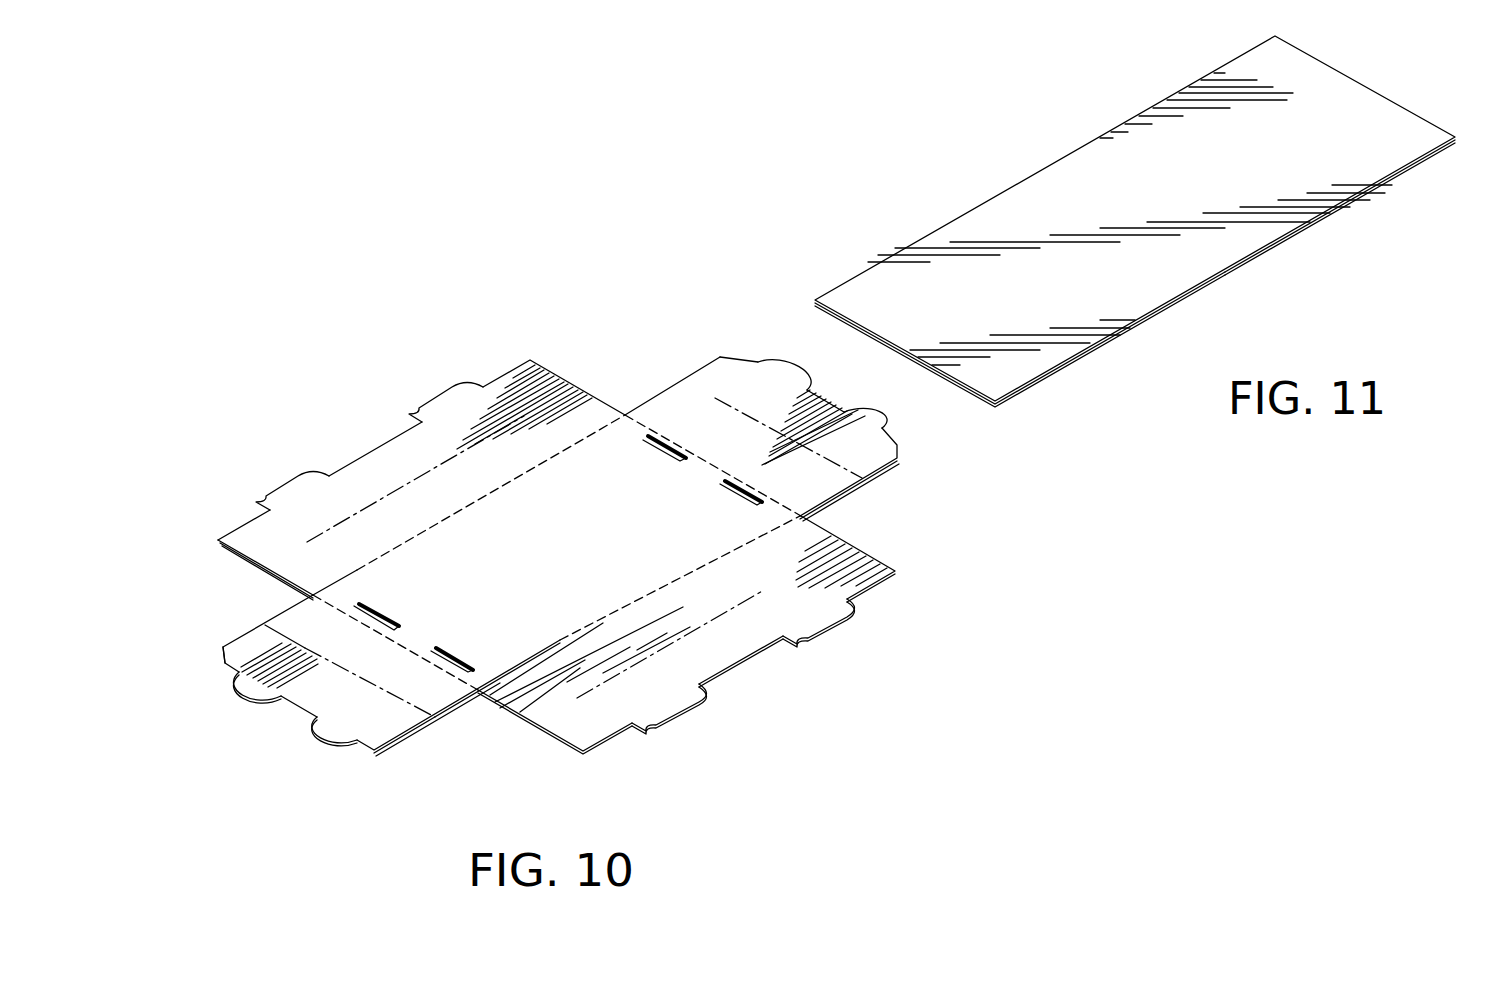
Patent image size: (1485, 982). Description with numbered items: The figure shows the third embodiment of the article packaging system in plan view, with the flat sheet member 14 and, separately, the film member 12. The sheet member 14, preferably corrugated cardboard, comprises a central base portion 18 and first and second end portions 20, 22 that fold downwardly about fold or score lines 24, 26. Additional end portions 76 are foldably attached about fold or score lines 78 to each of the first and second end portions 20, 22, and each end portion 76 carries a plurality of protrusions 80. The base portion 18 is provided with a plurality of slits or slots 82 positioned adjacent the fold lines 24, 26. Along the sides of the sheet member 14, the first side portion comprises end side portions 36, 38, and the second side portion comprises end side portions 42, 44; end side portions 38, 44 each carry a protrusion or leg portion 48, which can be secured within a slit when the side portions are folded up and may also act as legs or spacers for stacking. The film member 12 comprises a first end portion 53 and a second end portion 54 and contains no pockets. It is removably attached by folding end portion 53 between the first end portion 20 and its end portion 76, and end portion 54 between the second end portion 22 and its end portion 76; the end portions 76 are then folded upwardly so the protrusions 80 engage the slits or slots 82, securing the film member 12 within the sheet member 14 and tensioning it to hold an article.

In FIG. 11, the film member 12 is at (1080, 172).
In FIG. 10, the sheet member 14 is at (308, 370).
In FIG. 10, the base portion 18 is at (545, 560).
In FIG. 10, the first end portion 20 is at (830, 503).
In FIG. 10, the second end portion 22 is at (445, 715).
In FIG. 10, the fold or score line 24 is at (355, 617).
In FIG. 10, the fold or score line 26 is at (675, 440).
In FIG. 10, the end side portion 36 is at (725, 592).
In FIG. 10, the end side portion 38 is at (713, 657).
In FIG. 10, the end side portion 42 is at (425, 495).
In FIG. 10, the end side portion 44 is at (363, 478).
In FIG. 10, the protrusion or leg portion 48 is at (445, 385).
In FIG. 11, the first end portion 53 is at (1338, 210).
In FIG. 11, the second end portion 54 is at (1075, 365).
In FIG. 10, the end portion 76 is at (400, 728).
In FIG. 10, the fold or score line 78 is at (287, 647).
In FIG. 10, the protrusion 80 is at (240, 697).
In FIG. 10, the slit or slot 82 is at (358, 603).